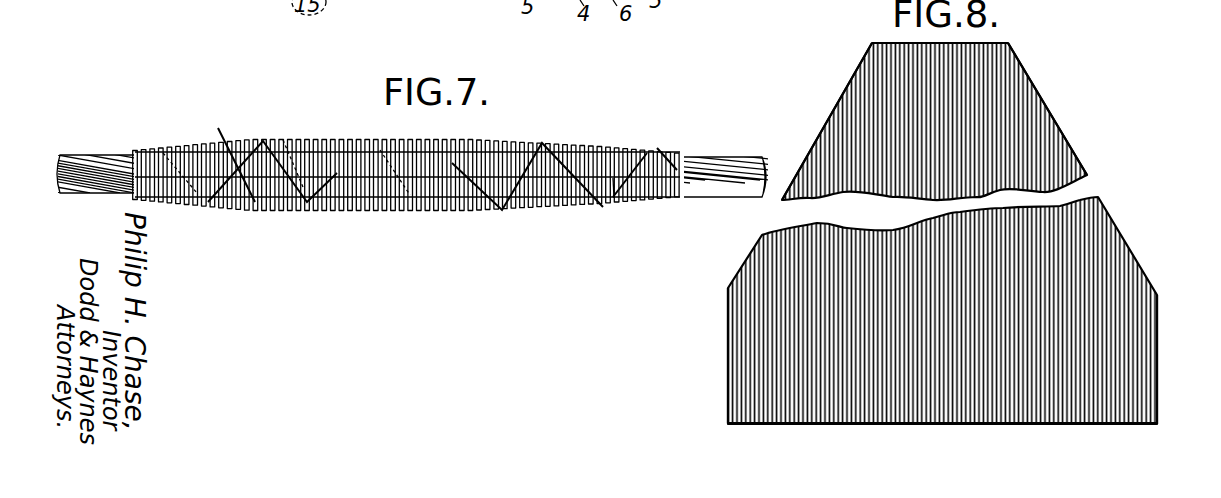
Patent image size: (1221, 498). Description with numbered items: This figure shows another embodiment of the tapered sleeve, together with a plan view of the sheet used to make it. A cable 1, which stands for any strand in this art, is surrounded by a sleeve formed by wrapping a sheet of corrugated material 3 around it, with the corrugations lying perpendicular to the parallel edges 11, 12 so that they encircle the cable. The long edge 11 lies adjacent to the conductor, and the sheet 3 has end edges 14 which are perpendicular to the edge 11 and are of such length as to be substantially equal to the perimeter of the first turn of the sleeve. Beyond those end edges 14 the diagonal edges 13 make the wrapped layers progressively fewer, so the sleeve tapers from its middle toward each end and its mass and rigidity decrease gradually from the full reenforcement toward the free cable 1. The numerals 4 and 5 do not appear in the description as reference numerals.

In FIG. 7, the cable 1 is at (113, 160).
In FIG. 7, the corrugated sheet 3 is at (393, 213).
In FIG. 8, the corrugated sheet 3 is at (1097, 219).
In FIG. 7, the coil turn 4 is at (358, 138).
In FIG. 7, the end coil turn 5 is at (187, 141).
In FIG. 7, the long edge 11 is at (160, 198).
In FIG. 8, the long edge 11 is at (932, 424).
In FIG. 7, the short edge 12 is at (432, 172).
In FIG. 8, the short edge 12 is at (982, 42).
In FIG. 7, the diagonal edge 13 is at (218, 128).
In FIG. 8, the diagonal edge 13 is at (828, 120).
In FIG. 8, the end edge 14 is at (728, 377).